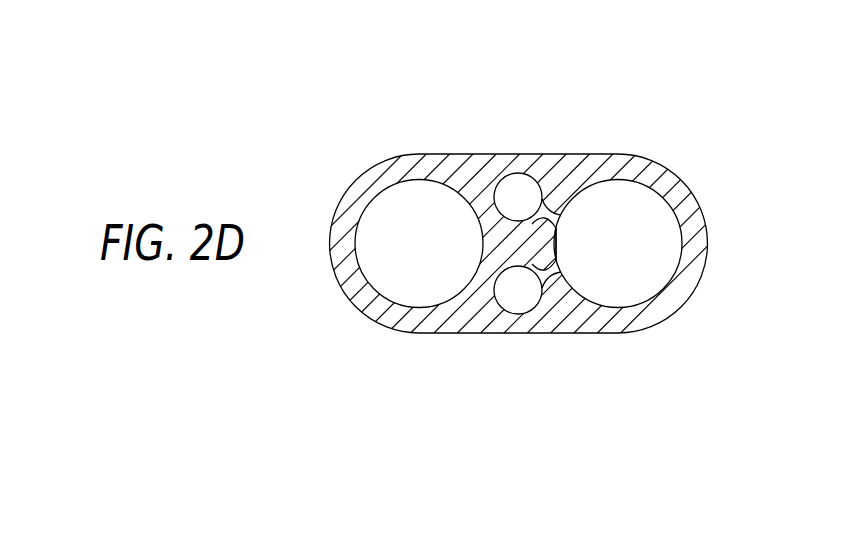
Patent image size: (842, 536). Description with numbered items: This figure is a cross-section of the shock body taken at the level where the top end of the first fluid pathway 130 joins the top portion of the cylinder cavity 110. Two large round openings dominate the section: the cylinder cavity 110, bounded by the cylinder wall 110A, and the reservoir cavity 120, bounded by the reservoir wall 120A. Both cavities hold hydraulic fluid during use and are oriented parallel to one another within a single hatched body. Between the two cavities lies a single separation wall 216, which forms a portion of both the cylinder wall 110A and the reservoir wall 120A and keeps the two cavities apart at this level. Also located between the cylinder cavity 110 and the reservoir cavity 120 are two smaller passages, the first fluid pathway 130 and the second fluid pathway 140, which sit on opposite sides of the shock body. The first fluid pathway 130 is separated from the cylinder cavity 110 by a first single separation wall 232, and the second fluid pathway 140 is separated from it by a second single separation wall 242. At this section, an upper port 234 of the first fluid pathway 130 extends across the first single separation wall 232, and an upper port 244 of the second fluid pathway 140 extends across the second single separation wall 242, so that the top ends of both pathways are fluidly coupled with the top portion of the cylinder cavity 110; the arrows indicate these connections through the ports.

The cylinder cavity 110 is at (653, 223).
The cylinder wall 110A is at (707, 242).
The reservoir cavity 120 is at (402, 212).
The reservoir wall 120A is at (335, 275).
The first fluid pathway 130 is at (518, 292).
The second fluid pathway 140 is at (517, 200).
The separation wall 216 is at (515, 243).
The first single separation wall 232 is at (559, 294).
The upper port of the first fluid pathway 234 is at (565, 270).
The second single separation wall 242 is at (559, 193).
The upper port of the second fluid pathway 244 is at (565, 220).